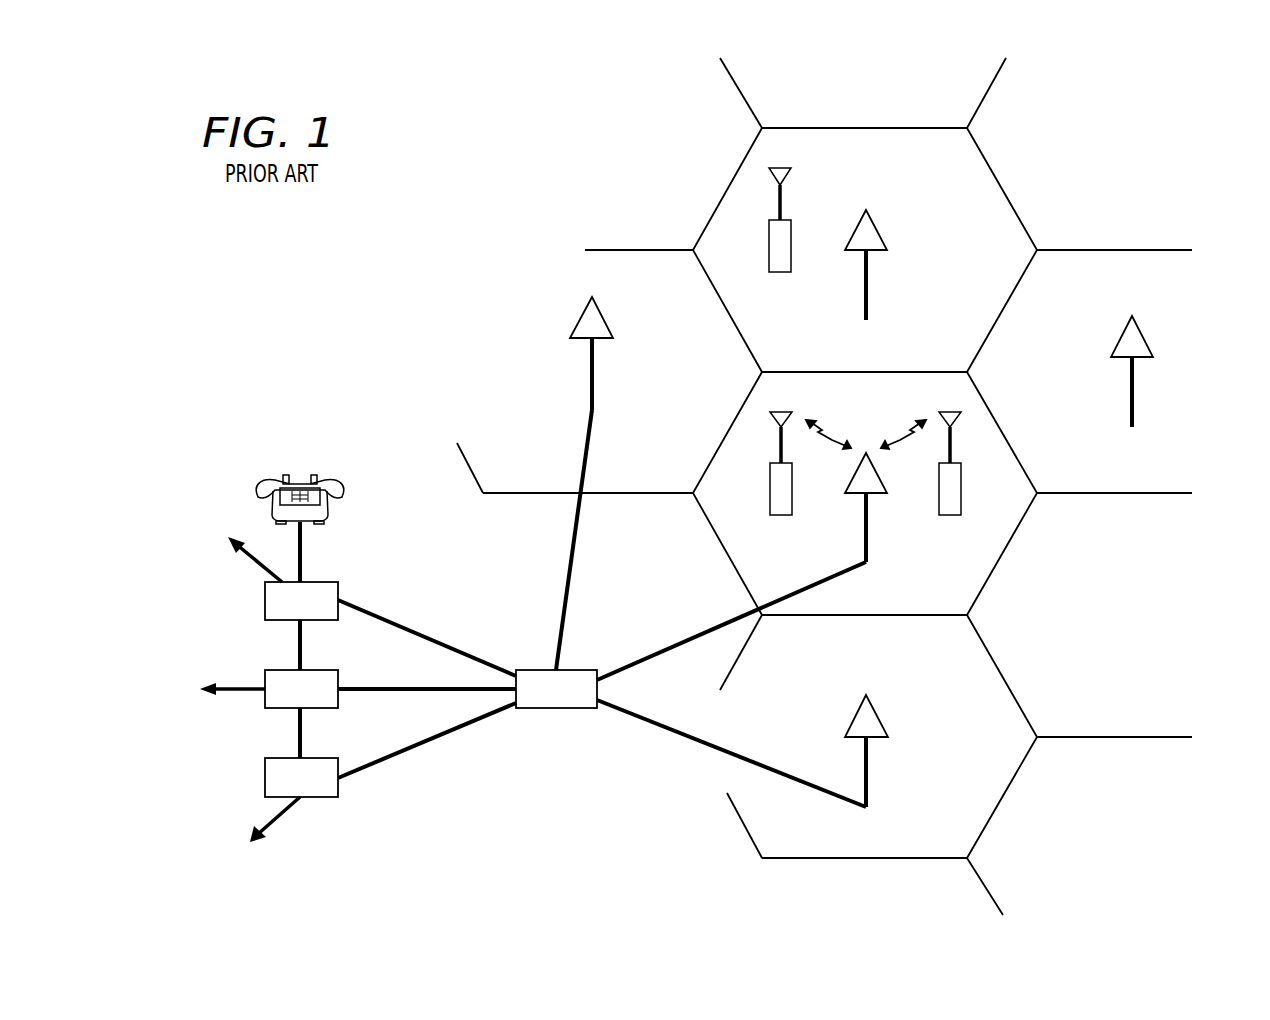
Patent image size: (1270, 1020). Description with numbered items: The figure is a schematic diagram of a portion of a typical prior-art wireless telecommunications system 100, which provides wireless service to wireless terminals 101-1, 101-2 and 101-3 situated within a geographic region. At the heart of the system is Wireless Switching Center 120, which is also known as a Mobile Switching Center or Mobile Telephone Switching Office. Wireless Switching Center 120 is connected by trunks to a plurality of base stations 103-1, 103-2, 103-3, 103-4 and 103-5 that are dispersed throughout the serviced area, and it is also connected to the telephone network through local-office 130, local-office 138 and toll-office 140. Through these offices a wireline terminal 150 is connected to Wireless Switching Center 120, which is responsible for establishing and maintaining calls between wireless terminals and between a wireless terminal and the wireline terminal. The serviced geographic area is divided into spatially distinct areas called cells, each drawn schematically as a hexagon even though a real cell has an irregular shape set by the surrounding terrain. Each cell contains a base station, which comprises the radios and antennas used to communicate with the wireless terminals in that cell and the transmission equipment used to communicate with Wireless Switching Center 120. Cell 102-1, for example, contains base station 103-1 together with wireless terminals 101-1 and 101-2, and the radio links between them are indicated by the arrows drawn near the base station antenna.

The wireless telecommunications system 100 is at (289, 239).
The wireless terminal 101-1 is at (781, 515).
The wireless terminal 101-2 is at (950, 515).
The wireless terminal 101-3 is at (780, 272).
The cell 102-1 is at (864, 617).
The base station 103-1 is at (866, 540).
The base station 103-2 is at (868, 290).
The base station 103-3 is at (595, 378).
The base station 103-4 is at (1135, 410).
The base station 103-5 is at (870, 782).
The Wireless Switching Center 120 is at (558, 710).
The local-office 130 is at (265, 598).
The local-office 138 is at (265, 776).
The toll-office 140 is at (265, 670).
The wireline terminal (telephone) 150 is at (302, 470).